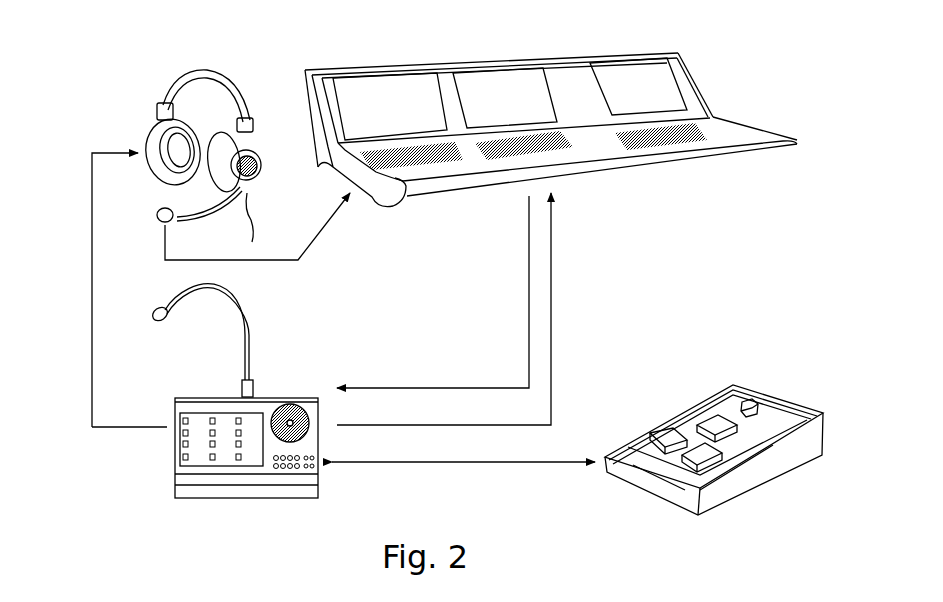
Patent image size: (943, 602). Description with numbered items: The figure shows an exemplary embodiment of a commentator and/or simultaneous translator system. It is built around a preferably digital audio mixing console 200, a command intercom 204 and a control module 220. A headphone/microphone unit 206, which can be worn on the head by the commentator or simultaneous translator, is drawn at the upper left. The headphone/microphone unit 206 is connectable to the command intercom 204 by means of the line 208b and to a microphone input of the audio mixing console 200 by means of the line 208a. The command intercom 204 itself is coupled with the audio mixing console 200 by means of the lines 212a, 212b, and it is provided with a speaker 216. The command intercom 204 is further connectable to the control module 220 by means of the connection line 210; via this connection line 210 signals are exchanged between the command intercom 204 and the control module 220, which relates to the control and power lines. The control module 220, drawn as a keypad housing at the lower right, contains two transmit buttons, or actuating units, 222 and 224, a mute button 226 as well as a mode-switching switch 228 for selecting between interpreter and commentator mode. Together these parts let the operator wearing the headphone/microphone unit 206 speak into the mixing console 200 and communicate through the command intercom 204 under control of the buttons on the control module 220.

The audio mixing console 200 is at (697, 163).
The command intercom 204 is at (192, 397).
The headphone/microphone unit 206 is at (163, 99).
The line 208a is at (267, 261).
The line 208b is at (83, 252).
The connection line 210 is at (438, 463).
The line 212a is at (528, 238).
The line 212b is at (553, 238).
The speaker 216 is at (287, 398).
The control module 220 is at (725, 380).
The transmit button 222 is at (662, 433).
The transmit button 224 is at (693, 460).
The mute button 226 is at (737, 420).
The mode-switching switch 228 is at (757, 400).